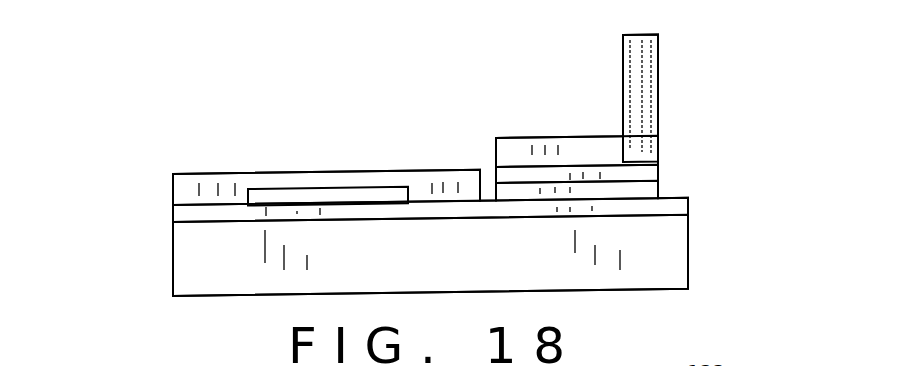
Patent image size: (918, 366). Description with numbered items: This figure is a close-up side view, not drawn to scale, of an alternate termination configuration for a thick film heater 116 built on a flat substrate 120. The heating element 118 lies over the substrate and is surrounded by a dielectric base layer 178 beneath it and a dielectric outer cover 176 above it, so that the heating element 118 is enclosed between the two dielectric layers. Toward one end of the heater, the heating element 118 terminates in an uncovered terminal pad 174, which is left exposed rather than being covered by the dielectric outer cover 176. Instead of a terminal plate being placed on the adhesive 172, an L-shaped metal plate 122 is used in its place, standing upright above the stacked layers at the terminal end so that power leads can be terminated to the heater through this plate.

The thick film heater 116 is at (144, 232).
The heating element 118 is at (343, 197).
The flat substrate 120 is at (652, 243).
The L-shaped metal plate 122 is at (645, 87).
The adhesive 172 is at (640, 170).
The terminal pad 174 is at (642, 188).
The dielectric outer cover 176 is at (218, 193).
The dielectric base layer 178 is at (665, 202).